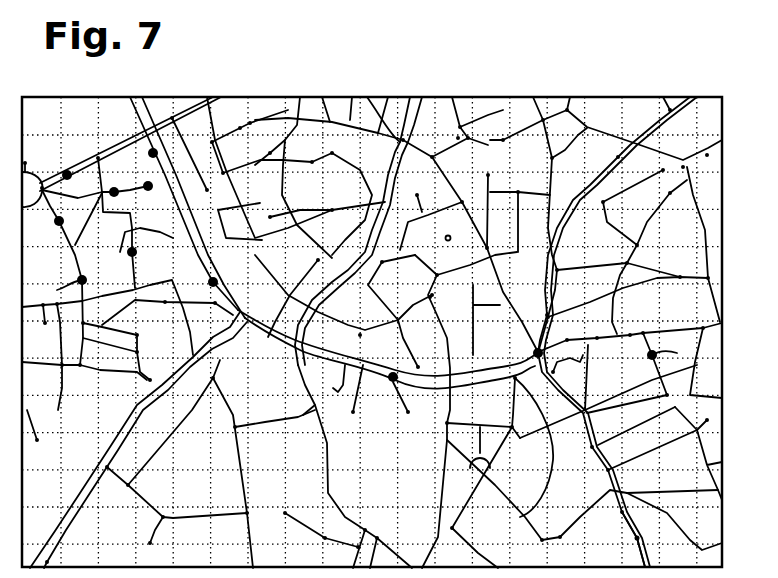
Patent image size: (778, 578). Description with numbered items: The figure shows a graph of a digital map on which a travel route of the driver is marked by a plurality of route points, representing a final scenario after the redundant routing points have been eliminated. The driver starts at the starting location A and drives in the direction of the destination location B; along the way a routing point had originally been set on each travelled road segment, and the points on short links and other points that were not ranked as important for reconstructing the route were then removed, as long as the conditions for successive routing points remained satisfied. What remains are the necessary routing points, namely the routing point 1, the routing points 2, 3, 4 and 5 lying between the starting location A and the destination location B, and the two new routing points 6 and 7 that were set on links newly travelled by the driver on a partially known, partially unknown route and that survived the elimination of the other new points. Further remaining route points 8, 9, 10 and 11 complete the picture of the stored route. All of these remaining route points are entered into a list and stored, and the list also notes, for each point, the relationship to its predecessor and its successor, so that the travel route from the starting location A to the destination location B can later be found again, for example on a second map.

The routing point 1 is at (137, 265).
The routing point 2 is at (155, 198).
The routing point 3 is at (205, 283).
The routing point 4 is at (387, 386).
The routing point 5 is at (546, 354).
The new routing point 6 is at (52, 226).
The new routing point 7 is at (118, 177).
The routing point 8 is at (77, 183).
The routing point 9 is at (145, 158).
The routing point 10 is at (617, 332).
The routing point 11 is at (623, 539).
The starting location A is at (61, 290).
The destination location B is at (672, 351).